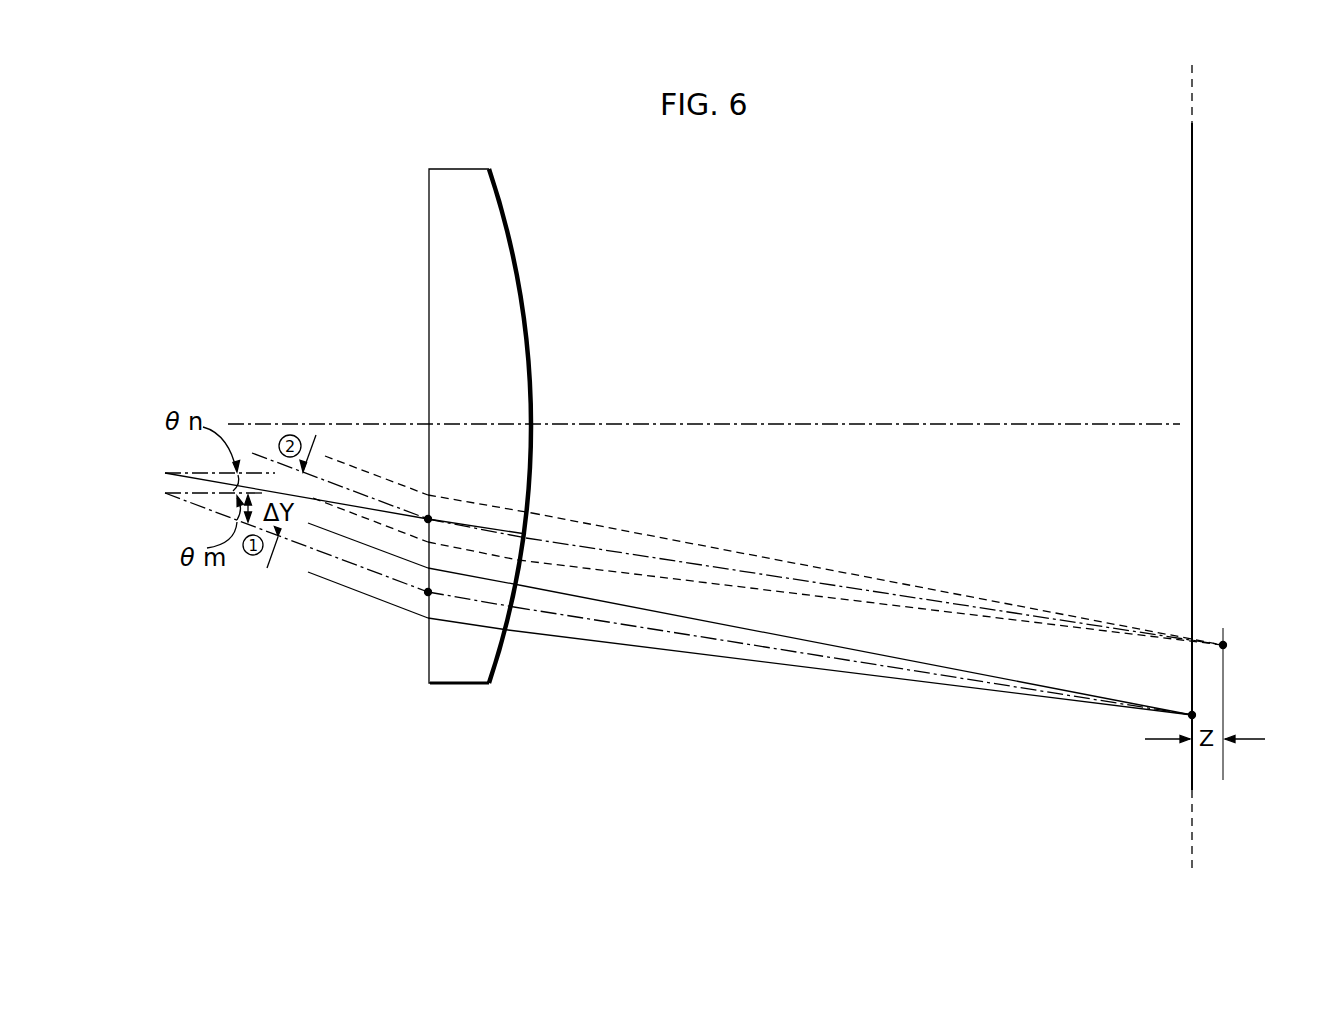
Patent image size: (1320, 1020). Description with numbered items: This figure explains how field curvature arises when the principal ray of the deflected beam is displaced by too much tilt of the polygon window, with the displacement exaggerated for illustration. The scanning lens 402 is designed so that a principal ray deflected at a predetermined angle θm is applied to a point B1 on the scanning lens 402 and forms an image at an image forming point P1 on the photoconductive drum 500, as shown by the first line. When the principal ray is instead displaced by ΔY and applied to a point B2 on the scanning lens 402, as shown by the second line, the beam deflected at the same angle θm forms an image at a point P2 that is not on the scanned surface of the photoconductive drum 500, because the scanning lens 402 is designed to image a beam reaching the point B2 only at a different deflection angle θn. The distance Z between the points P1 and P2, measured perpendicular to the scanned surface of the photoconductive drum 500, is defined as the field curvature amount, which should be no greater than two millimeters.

The scanning lens 402 is at (493, 303).
The photoconductive drum 500 is at (1214, 207).
The point B1 on the scanning lens B1 is at (428, 592).
The point B2 on the scanning lens B2 is at (428, 519).
The image forming point P1 is at (1192, 715).
The point P2 is at (1223, 645).